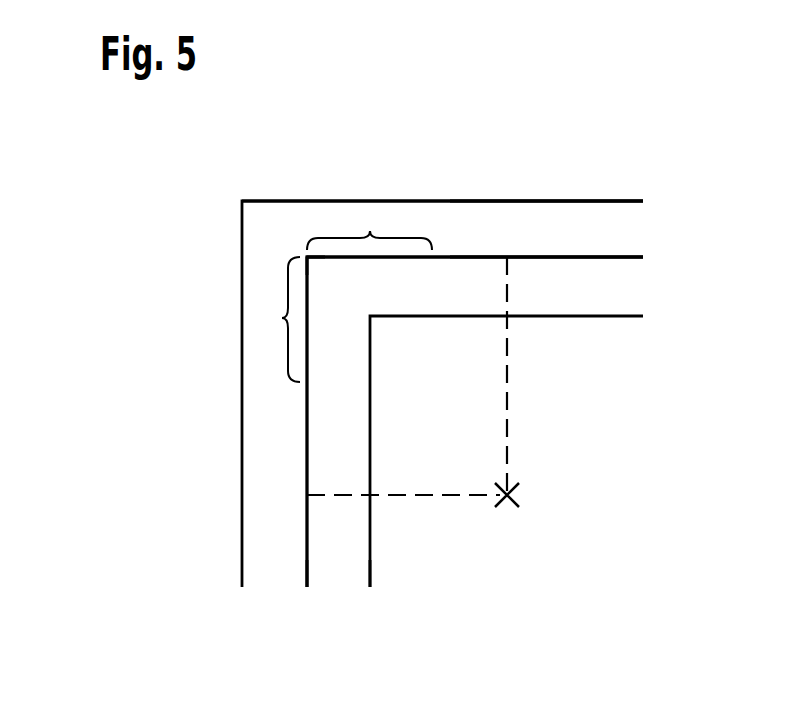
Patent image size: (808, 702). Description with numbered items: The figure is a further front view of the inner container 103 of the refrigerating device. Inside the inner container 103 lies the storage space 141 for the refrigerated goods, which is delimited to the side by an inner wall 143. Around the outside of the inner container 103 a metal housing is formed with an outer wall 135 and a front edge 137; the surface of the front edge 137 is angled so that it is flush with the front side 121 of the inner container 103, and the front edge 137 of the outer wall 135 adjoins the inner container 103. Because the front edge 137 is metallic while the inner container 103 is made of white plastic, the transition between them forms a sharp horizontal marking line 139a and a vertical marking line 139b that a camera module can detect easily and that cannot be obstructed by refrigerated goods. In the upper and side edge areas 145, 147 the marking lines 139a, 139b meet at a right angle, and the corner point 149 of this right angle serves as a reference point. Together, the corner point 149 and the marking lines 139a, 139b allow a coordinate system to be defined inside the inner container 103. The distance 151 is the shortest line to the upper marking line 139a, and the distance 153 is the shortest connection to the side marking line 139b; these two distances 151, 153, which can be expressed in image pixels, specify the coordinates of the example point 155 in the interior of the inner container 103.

The inner container 103 is at (588, 278).
The front side 121 is at (330, 555).
The outer wall 135 is at (471, 201).
The front edge 137 is at (534, 225).
The horizontal marking line 139a is at (580, 257).
The vertical marking line 139b is at (305, 456).
The storage space 141 is at (605, 384).
The inner wall 143 is at (627, 315).
The upper edge area 145 is at (370, 232).
The side edge area 147 is at (283, 318).
The corner point 149 is at (303, 256).
The distance 151 is at (507, 458).
The distance 153 is at (443, 495).
The example point 155 is at (513, 497).